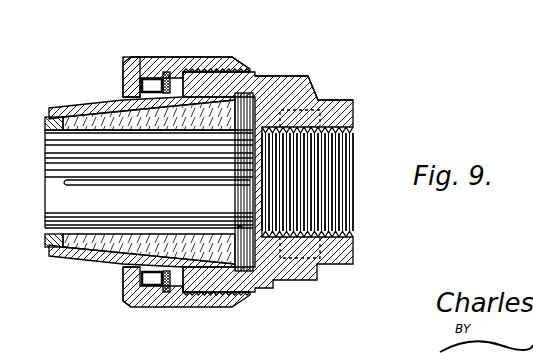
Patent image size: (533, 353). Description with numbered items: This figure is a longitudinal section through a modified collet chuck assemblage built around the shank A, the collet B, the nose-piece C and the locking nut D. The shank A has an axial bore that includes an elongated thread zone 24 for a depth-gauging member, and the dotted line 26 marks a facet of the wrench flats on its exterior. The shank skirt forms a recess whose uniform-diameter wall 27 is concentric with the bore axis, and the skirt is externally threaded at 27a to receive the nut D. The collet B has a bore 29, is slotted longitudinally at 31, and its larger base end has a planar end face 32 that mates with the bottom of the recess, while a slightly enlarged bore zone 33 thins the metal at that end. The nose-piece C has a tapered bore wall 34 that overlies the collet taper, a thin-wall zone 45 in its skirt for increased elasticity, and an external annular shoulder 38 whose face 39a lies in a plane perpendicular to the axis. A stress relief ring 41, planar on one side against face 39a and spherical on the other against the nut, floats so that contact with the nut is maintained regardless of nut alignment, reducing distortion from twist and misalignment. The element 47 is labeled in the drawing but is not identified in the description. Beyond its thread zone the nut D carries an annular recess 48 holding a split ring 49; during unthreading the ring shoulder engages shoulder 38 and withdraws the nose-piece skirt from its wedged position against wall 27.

The shank member A is at (319, 95).
The collet B is at (45, 174).
The nose-piece C is at (80, 107).
The locking ring or nut D is at (248, 50).
The elongated thread zone 24 is at (352, 212).
The dotted line representation of wrench flat 26 is at (290, 270).
The recess wall 27 is at (242, 77).
The external thread of shank skirt 27a is at (248, 293).
The collet bore 29 is at (63, 202).
The longitudinal slots 31 is at (176, 186).
The end face of collet base end 32 is at (272, 100).
The enlarged bore zone 33 is at (243, 233).
The tapered bore wall of nose piece 34 is at (108, 248).
The external annular shoulder 38 is at (150, 288).
The planar shoulder face 39a is at (128, 72).
The stress relief ring 41 is at (125, 287).
The thin-wall zone 45 is at (187, 283).
The nut inner shoulder 47 is at (123, 93).
The annular recess 48 is at (178, 58).
The split ring 49 is at (170, 72).